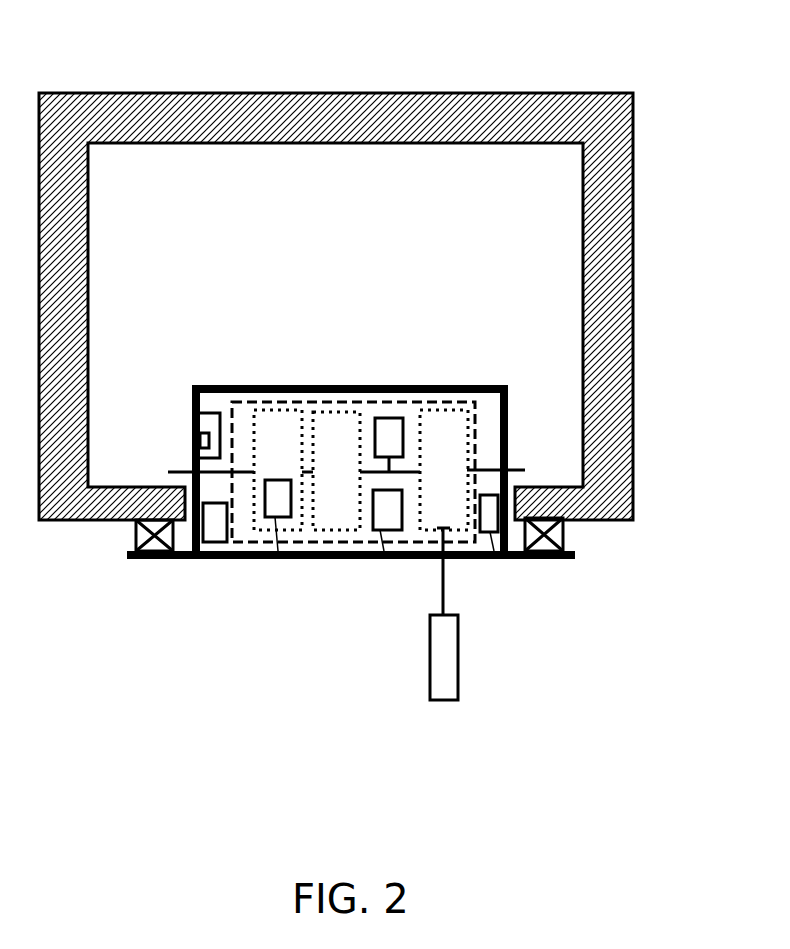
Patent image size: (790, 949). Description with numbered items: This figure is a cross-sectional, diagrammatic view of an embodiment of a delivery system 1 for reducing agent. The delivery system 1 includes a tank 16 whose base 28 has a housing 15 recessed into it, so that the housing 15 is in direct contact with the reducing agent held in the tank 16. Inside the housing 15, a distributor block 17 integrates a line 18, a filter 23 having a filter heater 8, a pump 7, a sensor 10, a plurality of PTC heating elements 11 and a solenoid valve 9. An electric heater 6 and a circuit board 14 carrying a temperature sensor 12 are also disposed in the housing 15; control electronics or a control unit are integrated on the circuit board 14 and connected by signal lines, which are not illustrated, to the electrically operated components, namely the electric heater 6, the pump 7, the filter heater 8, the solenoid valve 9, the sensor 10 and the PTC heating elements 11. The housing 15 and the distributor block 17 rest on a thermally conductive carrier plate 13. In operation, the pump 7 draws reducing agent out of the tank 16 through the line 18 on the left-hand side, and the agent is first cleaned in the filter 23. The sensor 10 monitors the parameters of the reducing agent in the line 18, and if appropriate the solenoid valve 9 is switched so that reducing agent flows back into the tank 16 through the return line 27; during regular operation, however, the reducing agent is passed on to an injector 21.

The delivery system 1 is at (667, 120).
The tank 16 is at (633, 256).
The housing 15 is at (510, 395).
The base 28 is at (598, 514).
The carrier plate 13 is at (315, 560).
The filter 23 is at (288, 412).
The pump 7 is at (332, 412).
The solenoid valve 9 is at (448, 410).
The sensor 10 is at (387, 418).
The distributor block 17 is at (487, 407).
The circuit board 14 is at (208, 413).
The temperature sensor 12 is at (198, 433).
The line 18 is at (168, 472).
The return line 27 is at (518, 468).
The electric heater 6 is at (212, 559).
The filter heater 8 is at (278, 559).
The PTC heating elements 11 is at (387, 559).
The injector 21 is at (458, 680).